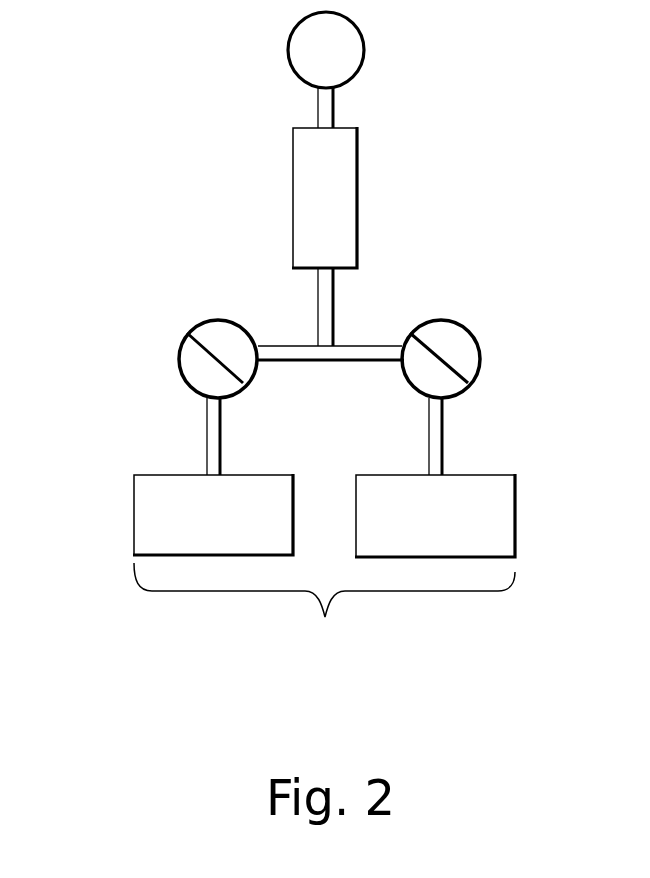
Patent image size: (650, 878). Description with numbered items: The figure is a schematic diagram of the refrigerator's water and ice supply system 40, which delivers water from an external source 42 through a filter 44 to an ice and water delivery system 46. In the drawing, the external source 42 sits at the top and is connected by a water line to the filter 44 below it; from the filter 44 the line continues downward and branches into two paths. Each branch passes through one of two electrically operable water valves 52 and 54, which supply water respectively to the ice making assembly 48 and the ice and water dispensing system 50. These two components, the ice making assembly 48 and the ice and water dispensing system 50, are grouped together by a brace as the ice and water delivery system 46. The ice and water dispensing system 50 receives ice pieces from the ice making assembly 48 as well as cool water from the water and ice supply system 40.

The water and ice supply system 40 is at (366, 13).
The external source 42 is at (313, 70).
The filter 44 is at (309, 211).
The ice and water delivery system 46 is at (324, 610).
The ice making assembly 48 is at (516, 503).
The ice and water dispensing system 50 is at (133, 515).
The water valve 52 is at (480, 364).
The water valve 54 is at (179, 355).